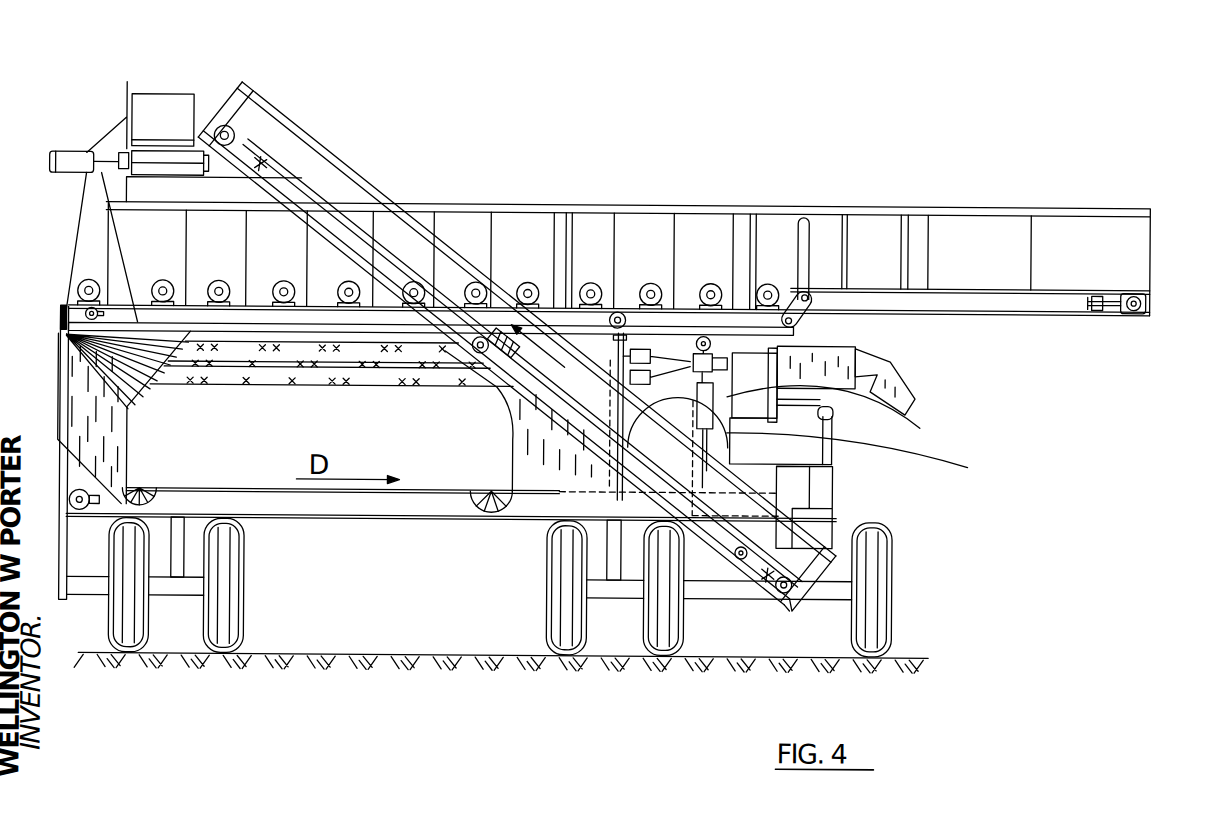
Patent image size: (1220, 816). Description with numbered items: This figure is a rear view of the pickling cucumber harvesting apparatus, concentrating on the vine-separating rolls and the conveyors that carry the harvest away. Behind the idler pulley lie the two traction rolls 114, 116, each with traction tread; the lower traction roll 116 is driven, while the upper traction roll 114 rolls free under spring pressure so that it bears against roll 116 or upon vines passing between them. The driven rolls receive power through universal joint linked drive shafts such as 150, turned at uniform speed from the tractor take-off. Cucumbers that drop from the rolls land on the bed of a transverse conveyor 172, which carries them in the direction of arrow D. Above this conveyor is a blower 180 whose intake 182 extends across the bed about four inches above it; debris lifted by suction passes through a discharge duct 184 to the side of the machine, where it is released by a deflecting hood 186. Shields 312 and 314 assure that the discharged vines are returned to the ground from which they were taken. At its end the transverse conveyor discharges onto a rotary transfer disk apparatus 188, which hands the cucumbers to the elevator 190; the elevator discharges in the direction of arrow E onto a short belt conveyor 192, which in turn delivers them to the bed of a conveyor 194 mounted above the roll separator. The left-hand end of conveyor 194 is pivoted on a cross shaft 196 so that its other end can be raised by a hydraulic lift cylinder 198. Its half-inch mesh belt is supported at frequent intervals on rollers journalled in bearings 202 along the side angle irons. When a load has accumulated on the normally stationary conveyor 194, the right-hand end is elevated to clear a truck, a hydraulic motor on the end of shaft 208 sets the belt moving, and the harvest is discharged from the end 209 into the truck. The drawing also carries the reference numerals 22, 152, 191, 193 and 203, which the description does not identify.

The wheels 22 is at (887, 596).
The upper traction roll 114 is at (233, 355).
The lower traction roll 116 is at (337, 379).
The universal joint linked drive shaft 150 is at (680, 360).
The hose 152 is at (847, 410).
The transverse conveyor 172 is at (420, 512).
The blower 180 is at (832, 461).
The intake 182 is at (832, 472).
The discharge duct 184 is at (808, 351).
The deflecting hood 186 is at (905, 391).
The rotary transfer disk apparatus 188 is at (817, 527).
The elevator 190 is at (383, 228).
The boom top roller 191 is at (233, 132).
The short belt conveyor 192 is at (160, 153).
The cylinder 193 is at (70, 158).
The conveyor 194 is at (163, 317).
The cross shaft 196 is at (66, 325).
The hydraulic lift cylinder 198 is at (869, 456).
The bearings 202 is at (283, 291).
The upper frame 203 is at (517, 222).
The shaft 208 is at (1133, 316).
The end 209 is at (1147, 292).
The shield 312 is at (128, 442).
The shield 314 is at (510, 441).